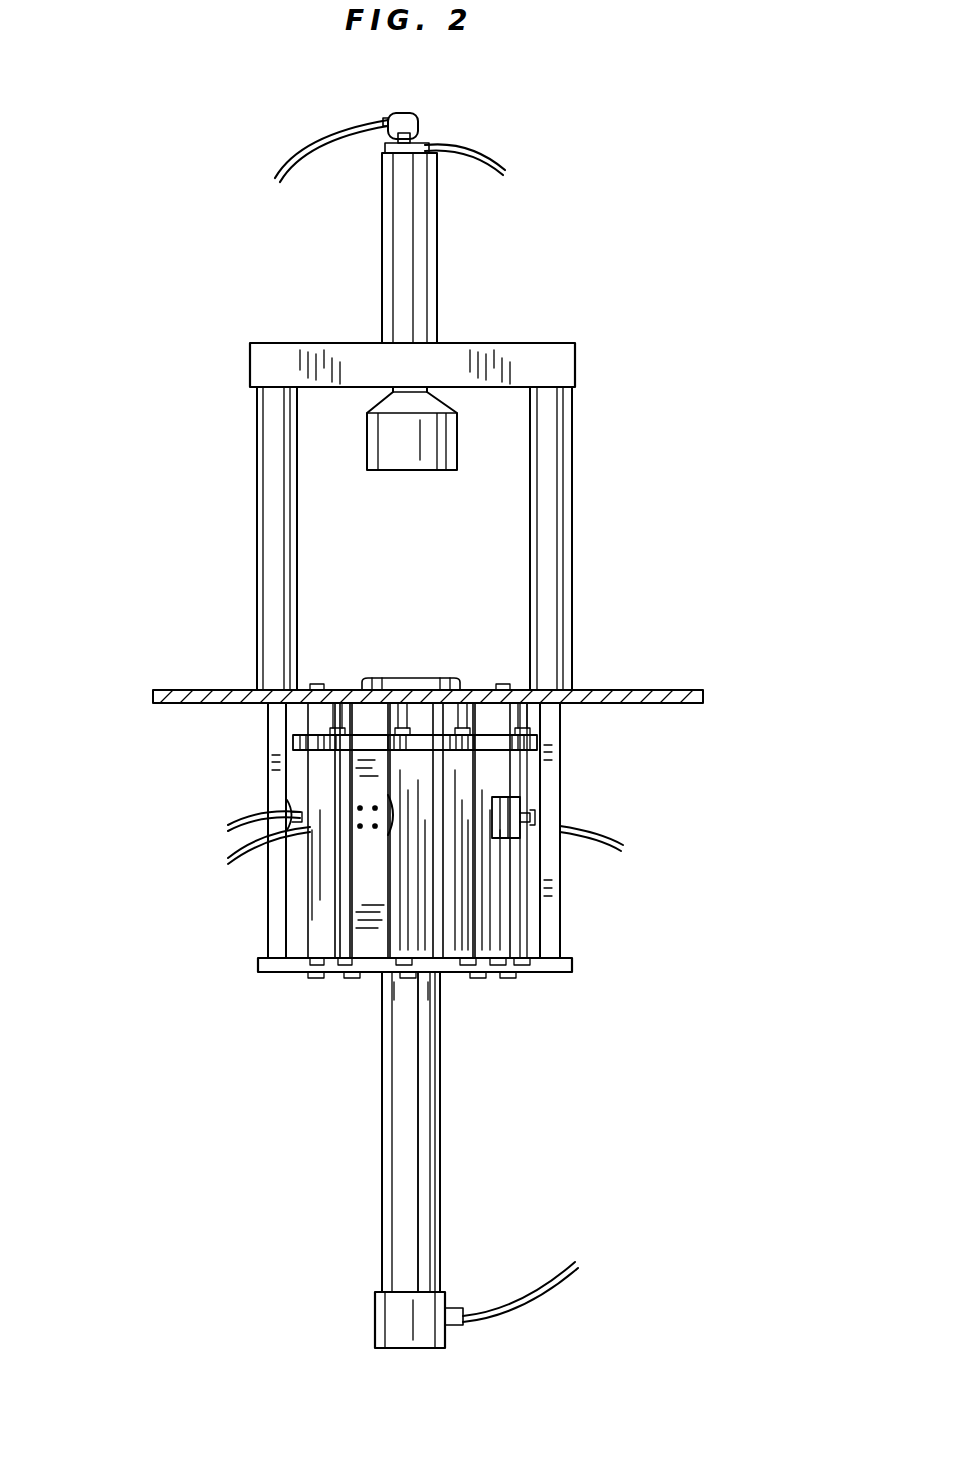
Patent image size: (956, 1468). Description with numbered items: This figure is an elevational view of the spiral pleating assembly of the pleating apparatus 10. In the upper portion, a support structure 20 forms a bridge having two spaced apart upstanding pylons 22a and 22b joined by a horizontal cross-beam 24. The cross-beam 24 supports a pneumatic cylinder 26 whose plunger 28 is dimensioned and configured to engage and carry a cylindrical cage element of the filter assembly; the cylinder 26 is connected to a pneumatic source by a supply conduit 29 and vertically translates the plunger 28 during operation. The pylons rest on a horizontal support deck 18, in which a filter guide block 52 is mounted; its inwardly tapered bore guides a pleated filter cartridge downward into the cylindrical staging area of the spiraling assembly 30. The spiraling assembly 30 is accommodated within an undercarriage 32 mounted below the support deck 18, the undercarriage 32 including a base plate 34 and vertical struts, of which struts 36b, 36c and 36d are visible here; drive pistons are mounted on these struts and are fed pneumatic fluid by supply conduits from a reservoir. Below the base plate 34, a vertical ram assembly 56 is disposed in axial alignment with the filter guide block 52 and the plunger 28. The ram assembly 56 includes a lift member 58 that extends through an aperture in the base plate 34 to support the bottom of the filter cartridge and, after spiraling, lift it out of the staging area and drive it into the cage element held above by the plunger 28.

The pleating apparatus 10 is at (142, 277).
The support deck 18 is at (637, 690).
The support structure 20 is at (560, 335).
The pylon 22a is at (270, 538).
The pylon 22b is at (560, 524).
The horizontal cross-beam 24 is at (345, 345).
The pneumatic cylinder 26 is at (427, 245).
The plunger 28 is at (440, 440).
The supply conduit 29 is at (332, 135).
The spiraling assembly 30 is at (410, 873).
The undercarriage 32 is at (562, 773).
The base plate 34 is at (538, 967).
The vertical strut 36b is at (555, 893).
The vertical strut 36c is at (372, 930).
The vertical strut 36d is at (272, 913).
The filter guide block 52 is at (440, 685).
The vertical ram assembly 56 is at (382, 1170).
The lift member 58 is at (420, 1140).